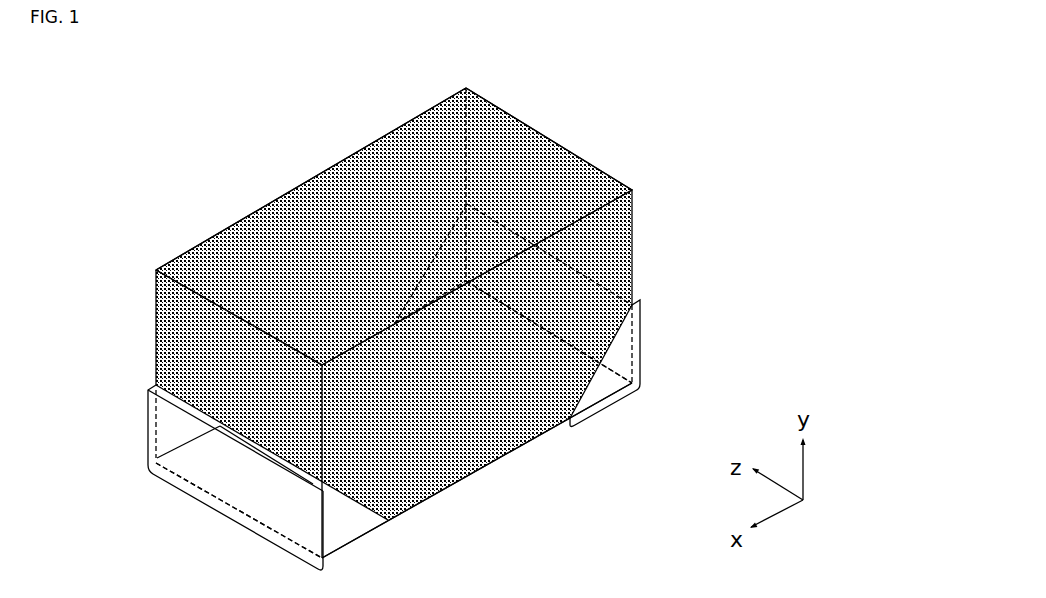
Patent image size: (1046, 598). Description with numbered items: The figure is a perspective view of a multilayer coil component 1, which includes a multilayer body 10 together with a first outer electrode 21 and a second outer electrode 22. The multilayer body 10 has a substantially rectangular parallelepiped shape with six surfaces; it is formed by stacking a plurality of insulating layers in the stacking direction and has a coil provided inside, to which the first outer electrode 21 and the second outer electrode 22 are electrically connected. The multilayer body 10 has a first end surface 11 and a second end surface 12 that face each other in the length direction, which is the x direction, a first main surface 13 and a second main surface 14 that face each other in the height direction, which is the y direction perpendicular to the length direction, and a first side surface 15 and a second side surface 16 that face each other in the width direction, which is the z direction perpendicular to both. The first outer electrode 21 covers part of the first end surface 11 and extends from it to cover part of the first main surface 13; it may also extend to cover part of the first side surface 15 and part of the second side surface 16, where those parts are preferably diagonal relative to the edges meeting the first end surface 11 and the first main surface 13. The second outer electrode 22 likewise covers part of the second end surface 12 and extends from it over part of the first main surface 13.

The multilayer coil component 1 is at (120, 149).
The multilayer body 10 is at (306, 174).
The first end surface 11 is at (173, 325).
The second end surface 12 is at (548, 168).
The first main surface 13 is at (420, 487).
The second main surface 14 is at (267, 240).
The first side surface 15 is at (495, 398).
The second side surface 16 is at (407, 178).
The first outer electrode 21 is at (217, 480).
The second outer electrode 22 is at (641, 347).